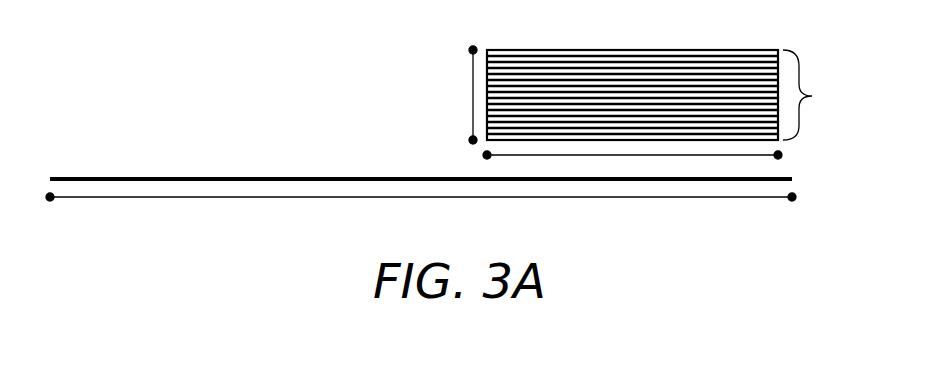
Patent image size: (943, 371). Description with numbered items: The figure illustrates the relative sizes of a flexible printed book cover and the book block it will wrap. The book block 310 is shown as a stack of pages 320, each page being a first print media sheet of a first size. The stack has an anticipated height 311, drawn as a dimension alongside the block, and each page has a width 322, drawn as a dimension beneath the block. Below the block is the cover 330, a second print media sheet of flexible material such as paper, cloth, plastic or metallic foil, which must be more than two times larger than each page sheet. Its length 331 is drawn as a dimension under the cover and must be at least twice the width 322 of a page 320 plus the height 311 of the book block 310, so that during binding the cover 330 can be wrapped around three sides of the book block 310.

The book block 310 is at (634, 50).
The height of the book block 311 is at (473, 96).
The pages 320 is at (825, 96).
The width of each first print media sheet 322 is at (666, 155).
The cover 330 is at (395, 178).
The length of the cover 331 is at (420, 197).